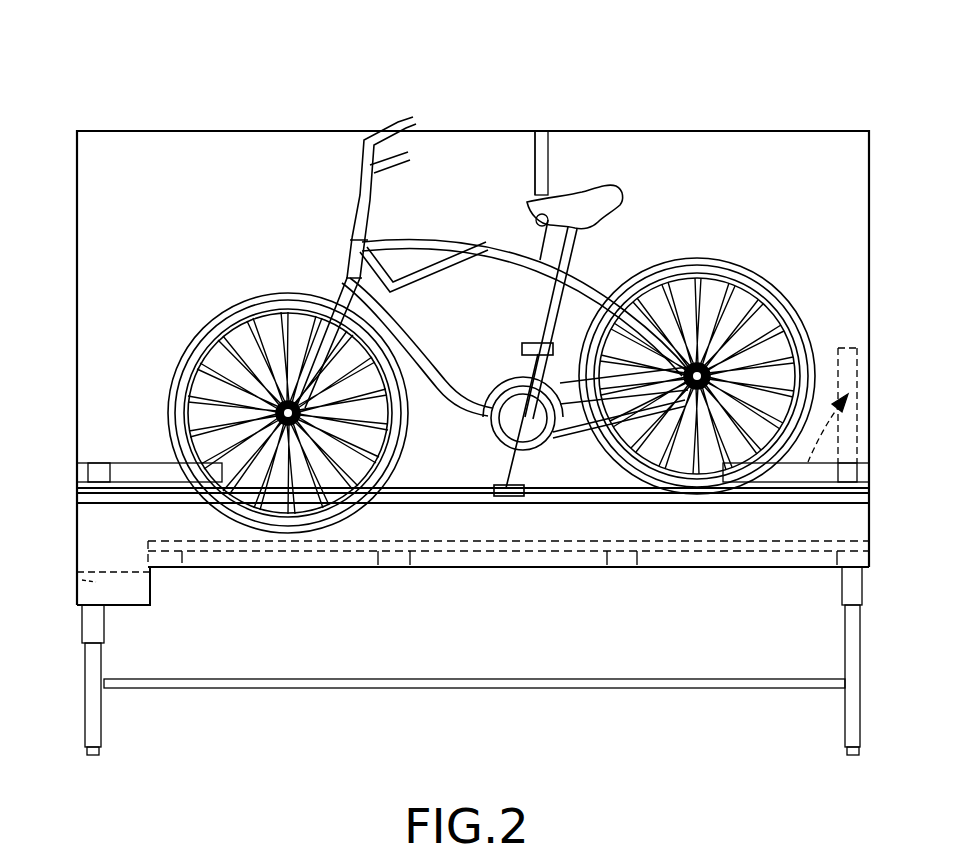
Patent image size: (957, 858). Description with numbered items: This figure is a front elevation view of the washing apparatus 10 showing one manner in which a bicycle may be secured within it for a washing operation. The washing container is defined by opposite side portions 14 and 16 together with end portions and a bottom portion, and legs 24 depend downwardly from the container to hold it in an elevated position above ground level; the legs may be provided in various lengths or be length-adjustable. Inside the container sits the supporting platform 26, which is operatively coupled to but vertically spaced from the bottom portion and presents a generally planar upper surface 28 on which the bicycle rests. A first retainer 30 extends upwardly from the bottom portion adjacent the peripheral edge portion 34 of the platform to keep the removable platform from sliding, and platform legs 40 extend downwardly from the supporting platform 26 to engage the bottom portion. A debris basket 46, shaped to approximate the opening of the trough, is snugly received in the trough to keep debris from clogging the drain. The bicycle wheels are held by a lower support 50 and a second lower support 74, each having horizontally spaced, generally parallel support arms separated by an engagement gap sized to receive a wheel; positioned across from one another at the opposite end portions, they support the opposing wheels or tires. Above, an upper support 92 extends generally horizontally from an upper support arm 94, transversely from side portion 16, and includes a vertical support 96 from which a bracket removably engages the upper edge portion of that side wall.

The washing apparatus 10 is at (124, 88).
The side portion 14 is at (148, 523).
The side portion 16 is at (797, 145).
The legs 24 is at (860, 651).
The supporting platform 26 is at (567, 551).
The upper surface 28 is at (660, 520).
The first retainer 30 is at (120, 543).
The peripheral edge portion 34 is at (158, 553).
The platform legs 40 is at (392, 558).
The debris basket 46 is at (72, 582).
The lower support 50 is at (124, 445).
The second lower support 74 is at (806, 482).
The upper support 92 is at (560, 136).
The upper support arm 94 is at (535, 220).
The vertical support 96 is at (546, 163).